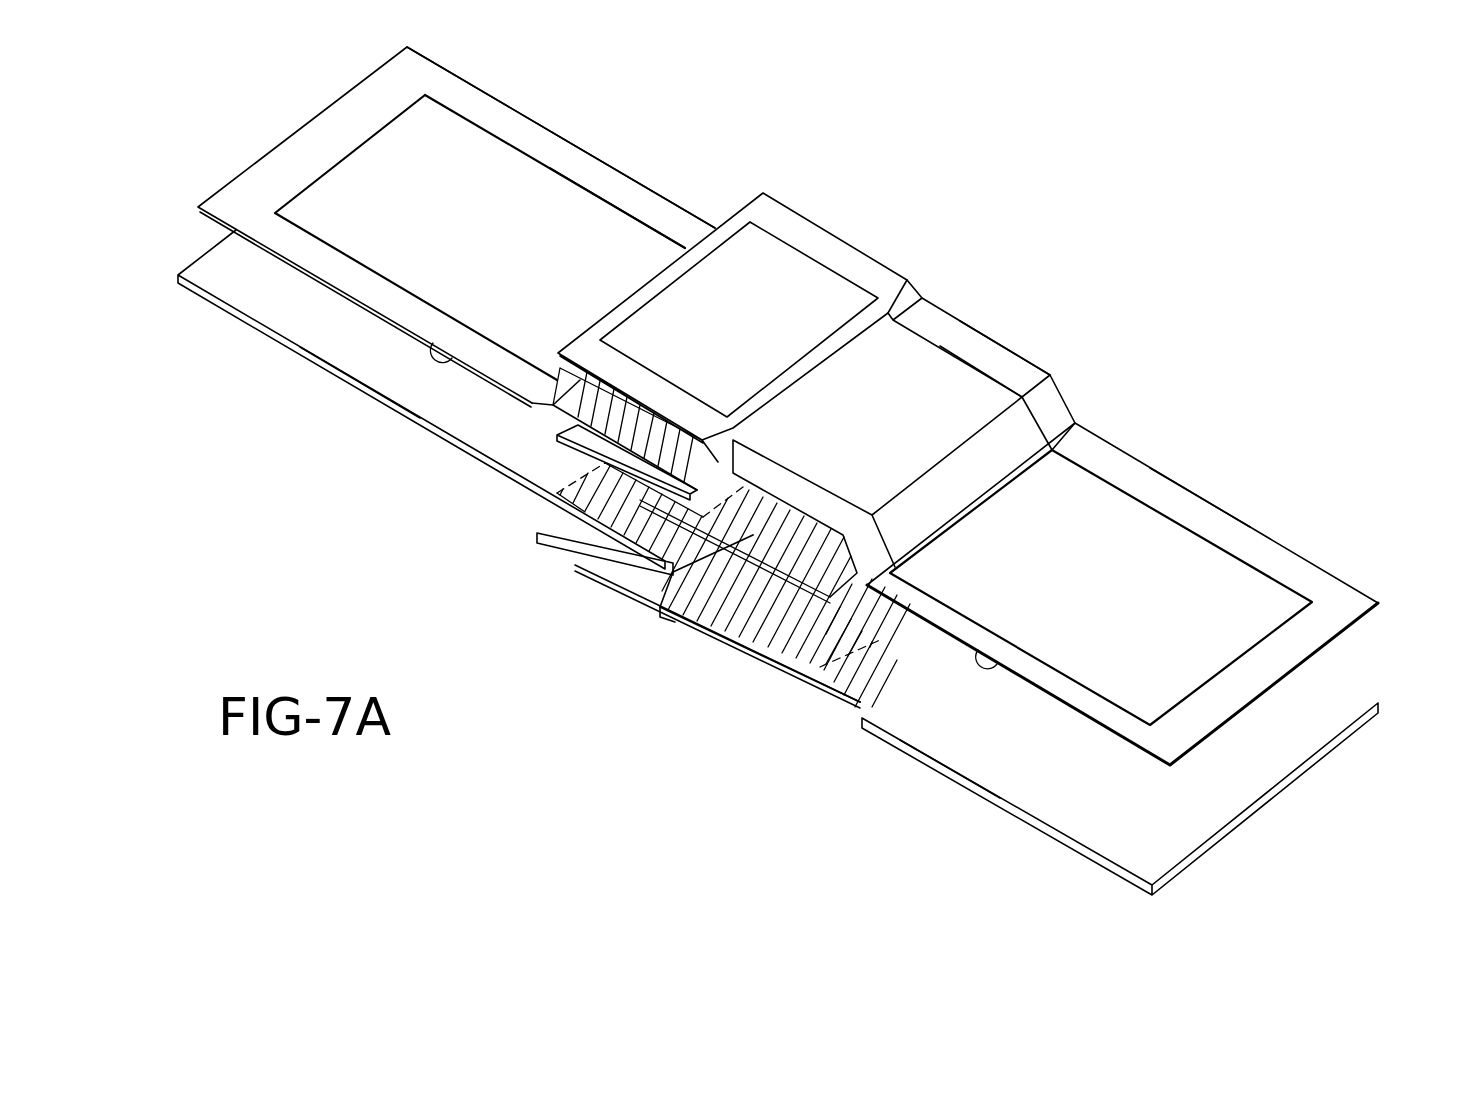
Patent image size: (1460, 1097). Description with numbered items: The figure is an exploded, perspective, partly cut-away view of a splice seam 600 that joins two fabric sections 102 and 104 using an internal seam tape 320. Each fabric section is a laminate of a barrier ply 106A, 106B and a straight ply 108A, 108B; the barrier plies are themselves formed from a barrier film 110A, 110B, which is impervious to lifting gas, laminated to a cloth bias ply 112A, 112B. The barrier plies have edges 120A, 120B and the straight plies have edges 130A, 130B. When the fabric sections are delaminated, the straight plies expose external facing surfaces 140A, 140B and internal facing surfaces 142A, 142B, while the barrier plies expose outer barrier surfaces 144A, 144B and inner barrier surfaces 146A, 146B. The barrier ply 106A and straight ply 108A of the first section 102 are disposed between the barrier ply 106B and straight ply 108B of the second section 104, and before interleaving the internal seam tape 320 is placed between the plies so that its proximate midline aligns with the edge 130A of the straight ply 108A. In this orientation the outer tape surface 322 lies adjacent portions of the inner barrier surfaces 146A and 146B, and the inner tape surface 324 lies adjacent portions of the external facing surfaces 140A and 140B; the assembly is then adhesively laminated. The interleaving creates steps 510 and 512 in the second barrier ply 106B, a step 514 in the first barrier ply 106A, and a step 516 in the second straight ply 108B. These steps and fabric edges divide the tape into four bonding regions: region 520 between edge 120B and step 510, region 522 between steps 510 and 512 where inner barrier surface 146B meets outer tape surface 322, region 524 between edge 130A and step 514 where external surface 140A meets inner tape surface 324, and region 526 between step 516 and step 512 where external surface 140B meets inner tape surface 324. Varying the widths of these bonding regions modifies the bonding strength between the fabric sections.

The fabric section 102 is at (170, 192).
The fabric section 104 is at (1384, 597).
The barrier ply 106A is at (290, 122).
The barrier ply 106B is at (1285, 540).
The straight ply 108A is at (243, 327).
The straight ply 108B is at (1094, 868).
The barrier film 110A is at (470, 215).
The barrier film 110B is at (1184, 613).
The cloth bias ply 112A is at (520, 130).
The cloth bias ply 112B is at (1190, 515).
The edge 120A is at (702, 484).
The edge 120B is at (735, 206).
The edge 130A is at (690, 557).
The edge 130B is at (540, 533).
The external facing surface 140A is at (396, 355).
The external facing surface 140B is at (1056, 750).
The internal facing surface 142A is at (345, 390).
The internal facing surface 142B is at (935, 762).
The outer barrier surface 144A is at (600, 230).
The outer barrier surface 144B is at (935, 382).
The inner barrier surface 146A is at (447, 340).
The inner barrier surface 146B is at (992, 650).
The internal seam tape 320 is at (803, 612).
The outer tape surface 322 is at (548, 424).
The inner tape surface 324 is at (600, 494).
The step 510 is at (902, 298).
The step 512 is at (1020, 440).
The step 514 is at (531, 392).
The step 516 is at (683, 590).
The bonding region 520 is at (640, 430).
The bonding region 522 is at (815, 540).
The bonding region 524 is at (563, 492).
The bonding region 526 is at (845, 640).
The splice seam 600 is at (1133, 250).